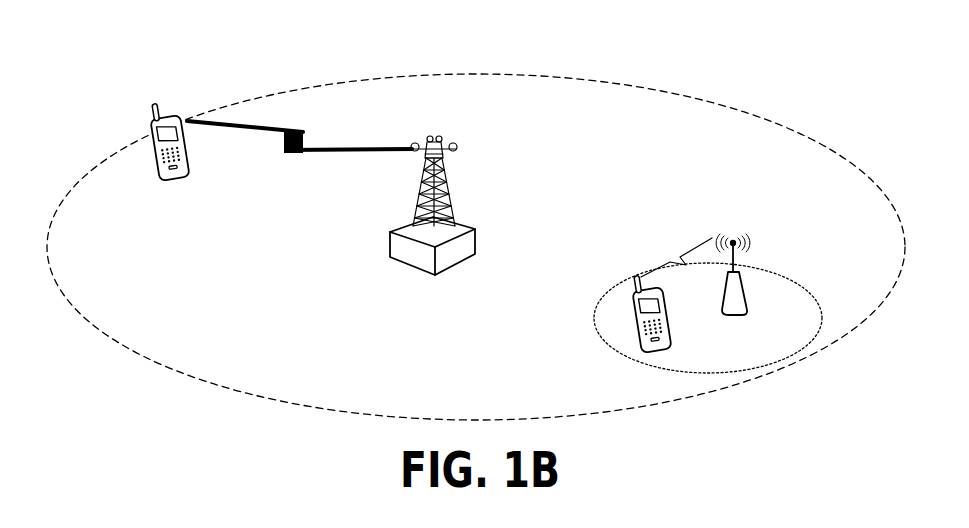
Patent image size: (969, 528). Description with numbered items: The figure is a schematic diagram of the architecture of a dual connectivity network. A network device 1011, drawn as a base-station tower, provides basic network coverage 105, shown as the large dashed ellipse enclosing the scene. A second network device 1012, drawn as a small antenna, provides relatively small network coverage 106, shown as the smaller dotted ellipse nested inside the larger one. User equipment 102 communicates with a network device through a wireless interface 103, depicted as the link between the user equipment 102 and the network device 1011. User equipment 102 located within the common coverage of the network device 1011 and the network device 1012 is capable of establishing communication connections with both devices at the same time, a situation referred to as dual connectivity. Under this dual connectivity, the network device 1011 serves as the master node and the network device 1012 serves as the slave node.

The basic network coverage 105 is at (457, 73).
The relatively small network coverage 106 is at (777, 367).
The user equipment 102 is at (169, 113).
The wireless interface 103 is at (350, 143).
The network device 1011 is at (480, 247).
The network device 1012 is at (750, 237).